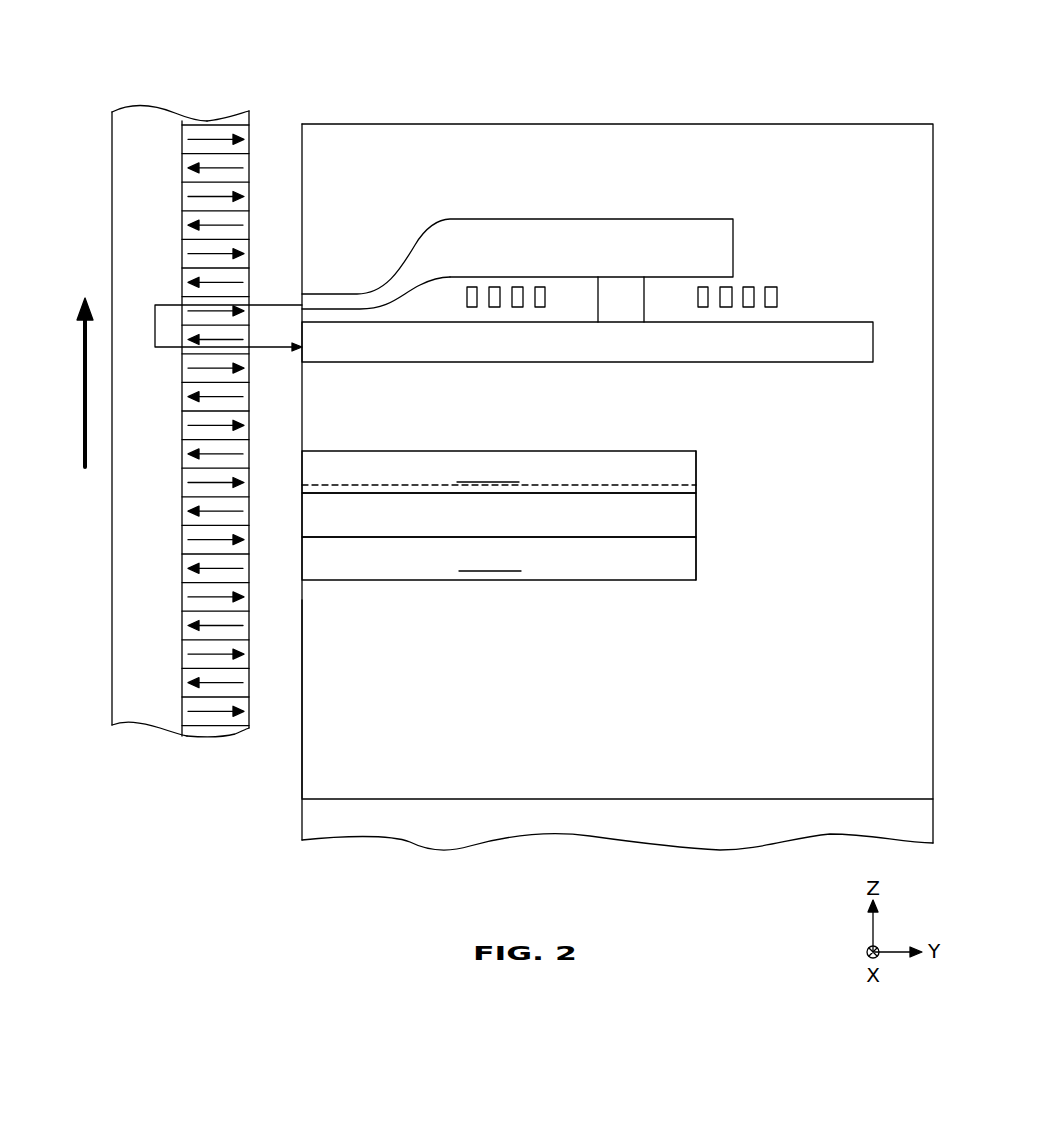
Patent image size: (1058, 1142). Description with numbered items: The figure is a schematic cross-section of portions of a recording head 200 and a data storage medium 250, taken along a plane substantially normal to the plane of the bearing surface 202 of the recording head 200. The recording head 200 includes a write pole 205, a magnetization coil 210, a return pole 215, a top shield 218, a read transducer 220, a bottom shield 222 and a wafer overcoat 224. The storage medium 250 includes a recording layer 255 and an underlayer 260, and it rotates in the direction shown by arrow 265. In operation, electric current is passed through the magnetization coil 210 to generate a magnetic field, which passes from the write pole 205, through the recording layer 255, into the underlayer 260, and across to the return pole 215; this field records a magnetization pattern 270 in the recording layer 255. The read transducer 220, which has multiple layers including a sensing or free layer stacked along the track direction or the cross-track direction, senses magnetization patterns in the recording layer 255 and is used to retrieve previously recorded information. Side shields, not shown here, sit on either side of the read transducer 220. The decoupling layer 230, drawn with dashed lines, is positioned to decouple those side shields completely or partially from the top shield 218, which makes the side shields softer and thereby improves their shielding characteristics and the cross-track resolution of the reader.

The recording head 200 is at (762, 86).
The bearing surface 202 is at (300, 770).
The write pole 205 is at (355, 293).
The magnetization coil 210 is at (515, 287).
The return pole 215 is at (518, 342).
The top shield 218 is at (596, 473).
The read transducer 220 is at (680, 529).
The bottom shield 222 is at (618, 562).
The wafer overcoat 224 is at (856, 424).
The decoupling layer 230 is at (387, 488).
The data storage medium 250 is at (157, 730).
The recording layer 255 is at (207, 120).
The underlayer 260 is at (130, 703).
The arrow 265 is at (83, 387).
The magnetization pattern 270 is at (222, 135).